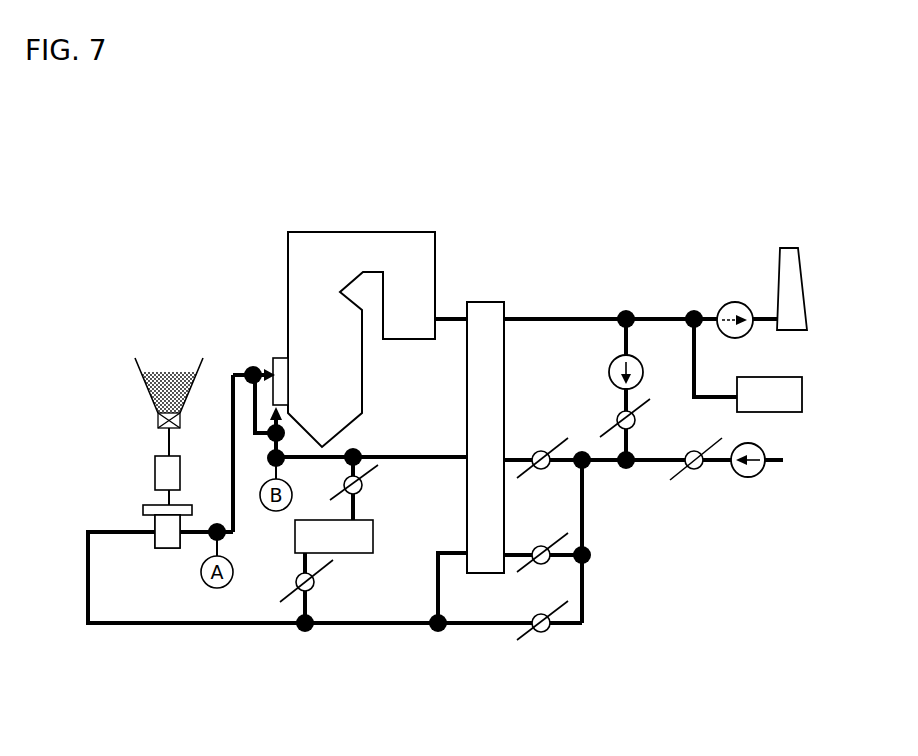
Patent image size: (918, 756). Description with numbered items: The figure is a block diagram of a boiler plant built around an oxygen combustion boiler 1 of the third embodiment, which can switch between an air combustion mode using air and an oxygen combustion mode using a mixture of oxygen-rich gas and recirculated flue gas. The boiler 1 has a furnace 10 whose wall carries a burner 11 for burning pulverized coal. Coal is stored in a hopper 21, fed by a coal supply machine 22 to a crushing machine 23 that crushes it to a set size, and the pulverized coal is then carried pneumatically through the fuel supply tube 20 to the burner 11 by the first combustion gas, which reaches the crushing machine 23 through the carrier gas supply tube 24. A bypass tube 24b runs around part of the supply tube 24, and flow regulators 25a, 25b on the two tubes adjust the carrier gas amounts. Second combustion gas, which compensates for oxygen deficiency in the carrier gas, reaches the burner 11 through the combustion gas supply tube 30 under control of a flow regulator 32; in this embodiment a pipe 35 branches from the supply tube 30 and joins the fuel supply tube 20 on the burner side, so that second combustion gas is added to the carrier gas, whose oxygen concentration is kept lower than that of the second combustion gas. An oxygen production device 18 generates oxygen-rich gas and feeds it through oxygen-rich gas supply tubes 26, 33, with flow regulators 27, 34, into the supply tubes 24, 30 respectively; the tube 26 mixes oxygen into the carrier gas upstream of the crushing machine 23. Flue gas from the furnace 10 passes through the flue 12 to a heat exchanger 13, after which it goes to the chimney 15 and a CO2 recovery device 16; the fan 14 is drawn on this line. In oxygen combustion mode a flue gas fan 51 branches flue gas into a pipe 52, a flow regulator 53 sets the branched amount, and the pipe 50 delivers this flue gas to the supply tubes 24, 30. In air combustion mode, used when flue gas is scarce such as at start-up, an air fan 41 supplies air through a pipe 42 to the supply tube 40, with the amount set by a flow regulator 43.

The oxygen combustion boiler 1 is at (352, 207).
The furnace 10 is at (300, 277).
The burner 11 is at (273, 360).
The flue 12 is at (448, 318).
The heat exchanger 13 is at (493, 302).
The induced draft fan 14 is at (734, 302).
The chimney 15 is at (790, 292).
The CO2 recovery device 16 is at (788, 412).
The oxygen production device 18 is at (347, 547).
The fuel supply tube 20 is at (243, 372).
The hopper 21 is at (157, 388).
The coal supply machine 22 is at (165, 475).
The crushing machine 23 is at (168, 527).
The carrier gas supply tube 24 is at (135, 627).
The bypass tube 24b is at (525, 548).
The flow regulator 25a is at (542, 632).
The flow regulator 25b is at (551, 560).
The oxygen-rich gas supply tube 26 is at (300, 608).
The flow regulator 27 is at (287, 593).
The combustion gas supply tube 30 is at (312, 461).
The flow regulator 32 is at (590, 470).
The oxygen-rich gas supply tube 33 is at (361, 487).
The flow regulator 34 is at (362, 503).
The pipe 35 is at (231, 370).
The supply tube 40 is at (654, 467).
The air fan 41 is at (750, 480).
The pipe 42 is at (718, 467).
The flow regulator 43 is at (692, 473).
The pipe 50 is at (613, 433).
The flue gas fan 51 is at (643, 357).
The pipe 52 is at (624, 343).
The flow regulator 53 is at (637, 423).